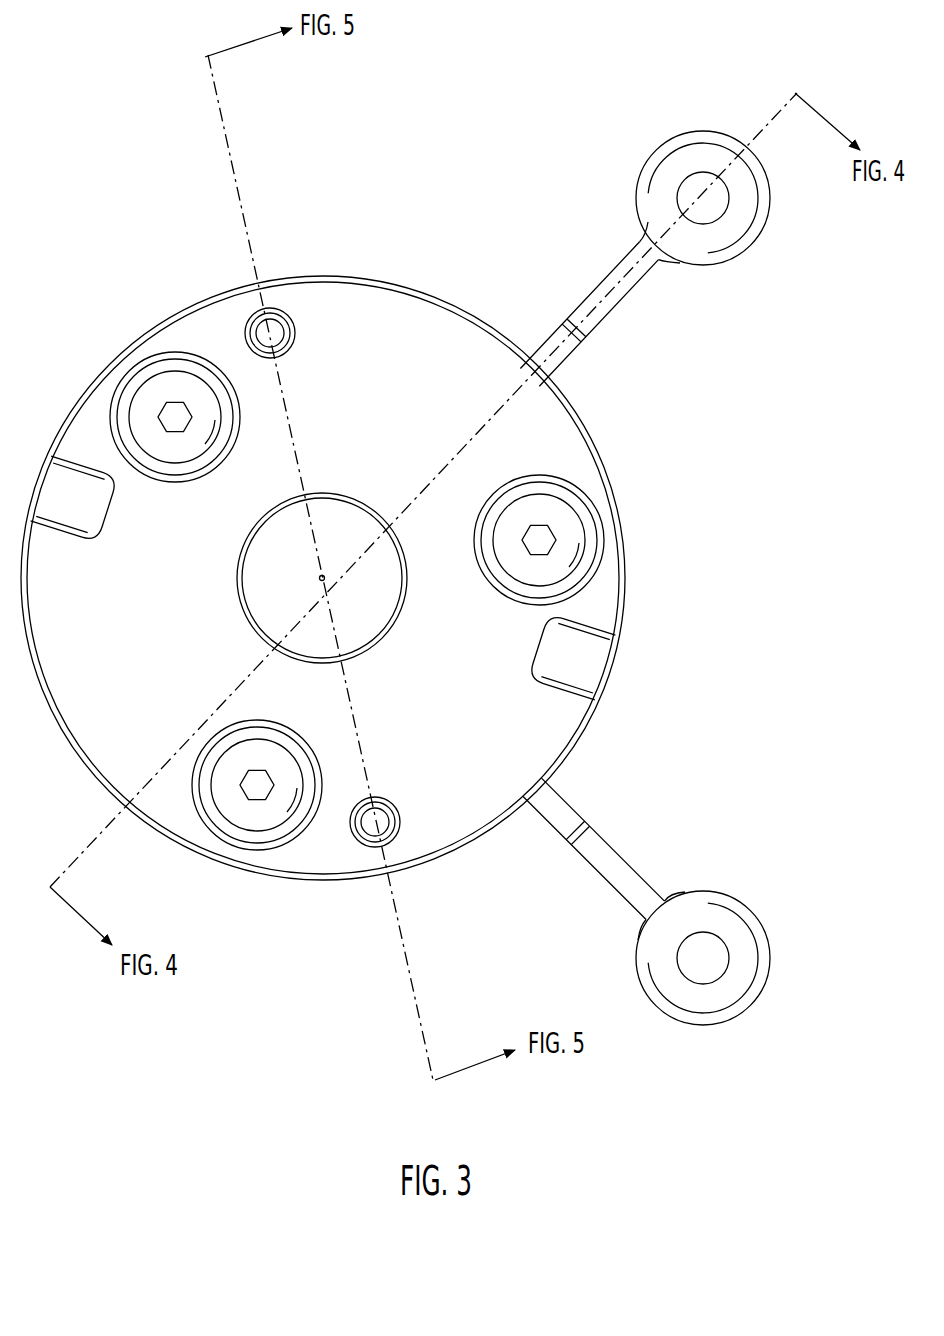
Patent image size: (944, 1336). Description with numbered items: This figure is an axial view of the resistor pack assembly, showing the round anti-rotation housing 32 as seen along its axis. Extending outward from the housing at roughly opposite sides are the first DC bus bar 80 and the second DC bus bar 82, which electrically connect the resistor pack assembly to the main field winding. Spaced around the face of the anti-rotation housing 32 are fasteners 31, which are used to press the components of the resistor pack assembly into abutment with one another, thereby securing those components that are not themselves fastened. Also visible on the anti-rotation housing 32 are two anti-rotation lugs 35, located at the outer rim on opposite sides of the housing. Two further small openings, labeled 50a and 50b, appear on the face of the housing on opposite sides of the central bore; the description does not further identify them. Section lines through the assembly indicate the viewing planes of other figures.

The anti-rotation housing 32 is at (552, 423).
The fasteners 31 is at (553, 530).
The anti-rotation lugs 35 is at (578, 658).
The alignment hole 50a is at (283, 333).
The alignment hole 50b is at (398, 826).
The first DC bus bar 80 is at (740, 247).
The second DC bus bar 82 is at (688, 1000).